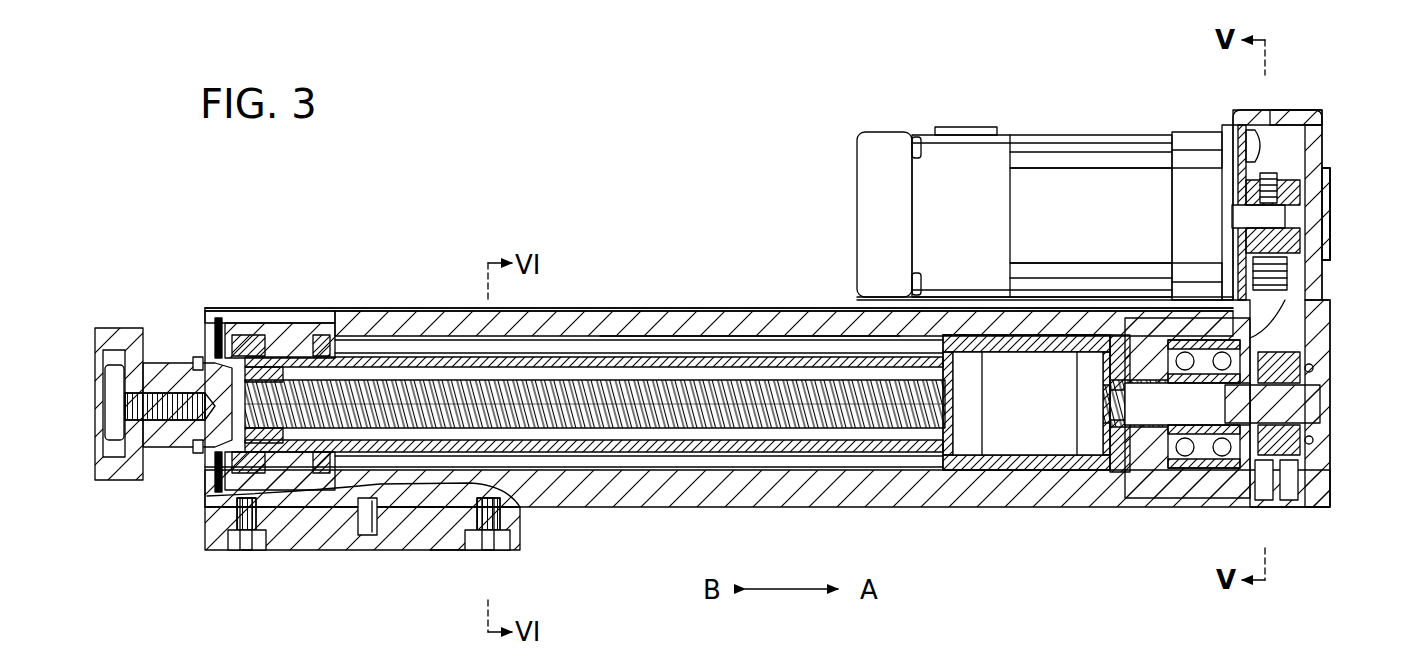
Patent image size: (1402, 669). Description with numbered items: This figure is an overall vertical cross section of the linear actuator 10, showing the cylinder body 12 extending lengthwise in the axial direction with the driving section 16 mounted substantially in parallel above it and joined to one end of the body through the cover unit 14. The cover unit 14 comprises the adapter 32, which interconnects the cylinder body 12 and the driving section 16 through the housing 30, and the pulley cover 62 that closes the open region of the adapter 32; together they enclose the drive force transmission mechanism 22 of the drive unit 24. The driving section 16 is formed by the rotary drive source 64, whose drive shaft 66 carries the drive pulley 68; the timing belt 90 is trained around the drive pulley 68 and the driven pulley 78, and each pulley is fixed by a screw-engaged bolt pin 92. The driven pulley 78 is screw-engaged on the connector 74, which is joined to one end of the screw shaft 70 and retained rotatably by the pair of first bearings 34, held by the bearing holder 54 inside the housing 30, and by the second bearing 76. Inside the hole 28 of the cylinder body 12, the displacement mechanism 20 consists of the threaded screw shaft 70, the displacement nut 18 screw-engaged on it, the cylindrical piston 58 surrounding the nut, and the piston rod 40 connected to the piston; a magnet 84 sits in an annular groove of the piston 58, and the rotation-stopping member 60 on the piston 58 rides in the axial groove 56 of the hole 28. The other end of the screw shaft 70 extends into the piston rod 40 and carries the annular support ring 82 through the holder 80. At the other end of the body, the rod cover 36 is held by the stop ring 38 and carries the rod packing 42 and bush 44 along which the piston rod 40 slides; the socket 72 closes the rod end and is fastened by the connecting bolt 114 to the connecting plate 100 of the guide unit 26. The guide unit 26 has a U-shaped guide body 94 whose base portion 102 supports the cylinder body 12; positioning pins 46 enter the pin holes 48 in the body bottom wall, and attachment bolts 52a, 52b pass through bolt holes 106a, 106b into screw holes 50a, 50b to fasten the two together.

The linear actuator 10 is at (506, 165).
The cylinder body 12 is at (638, 316).
The cover unit 14 is at (1333, 207).
The driving section 16 is at (1028, 126).
The displacement nut 18 is at (1027, 443).
The displacement mechanism 20 is at (636, 432).
The drive force transmission mechanism 22 is at (1335, 120).
The drive unit 24 is at (808, 266).
The guide unit 26 is at (330, 530).
The hole 28 is at (360, 356).
The housing 30 is at (1205, 492).
The adapter 32 is at (1243, 126).
The first bearings 34 is at (1212, 330).
The rod cover 36 is at (287, 330).
The stop ring 38 is at (217, 320).
The piston rod 40 is at (404, 354).
The rod packing 42 is at (250, 456).
The bush 44 is at (318, 335).
The positioning pins 46 is at (400, 525).
The pin holes 48 is at (368, 512).
The screw hole 50a is at (237, 505).
The screw hole 50b is at (520, 512).
The attachment bolt 52a is at (260, 543).
The attachment bolt 52b is at (508, 545).
The bearing holder 54 is at (1160, 472).
The groove 56 is at (737, 335).
The piston 58 is at (990, 468).
The rotation-stopping member 60 is at (1075, 335).
The pulley cover 62 is at (1308, 122).
The rotary drive source 64 is at (1140, 205).
The drive shaft 66 is at (1333, 195).
The drive pulley 68 is at (1302, 245).
The screw shaft 70 is at (687, 407).
The socket 72 is at (178, 364).
The connector 74 is at (1297, 398).
The second bearing 76 is at (1305, 430).
The driven pulley 78 is at (1290, 492).
The holder 80 is at (252, 442).
The support ring 82 is at (248, 335).
The magnet 84 is at (953, 335).
The timing belt 90 is at (1290, 272).
The bolt pin 92 is at (1262, 192).
The guide body 94 is at (332, 528).
The connecting plate 100 is at (111, 340).
The base portion 102 is at (445, 535).
The bolt hole 106a is at (244, 522).
The bolt hole 106b is at (492, 522).
The connecting bolt 114 is at (116, 402).